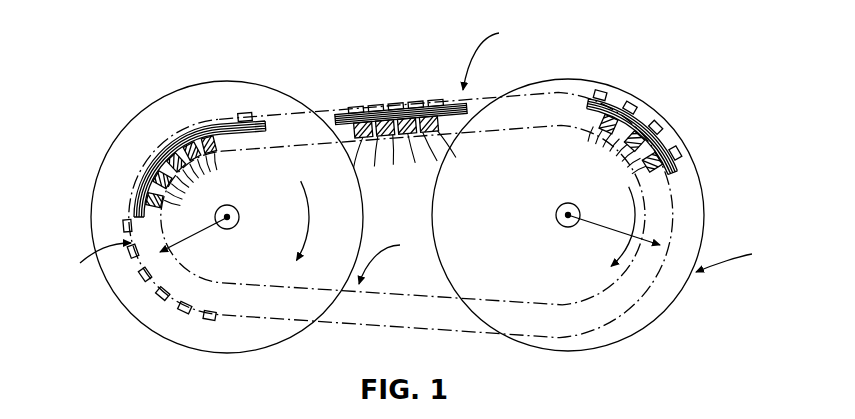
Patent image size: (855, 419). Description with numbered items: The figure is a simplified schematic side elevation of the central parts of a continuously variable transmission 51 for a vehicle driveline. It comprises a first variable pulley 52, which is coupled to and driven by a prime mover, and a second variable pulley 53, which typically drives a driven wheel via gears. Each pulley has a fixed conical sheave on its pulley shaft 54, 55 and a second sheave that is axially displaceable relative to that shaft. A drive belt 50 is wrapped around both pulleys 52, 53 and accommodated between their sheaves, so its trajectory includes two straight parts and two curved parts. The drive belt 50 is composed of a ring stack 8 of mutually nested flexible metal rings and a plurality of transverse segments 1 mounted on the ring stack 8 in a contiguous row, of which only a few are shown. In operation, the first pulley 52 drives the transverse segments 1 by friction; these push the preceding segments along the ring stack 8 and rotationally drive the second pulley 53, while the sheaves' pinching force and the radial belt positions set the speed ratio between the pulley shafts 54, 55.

The transverse segment 1 is at (643, 162).
The ring stack 8 is at (675, 159).
The drive belt 50 is at (392, 95).
The continuously variable transmission 51 is at (694, 46).
The first variable pulley 52 is at (161, 112).
The second variable pulley 53 is at (562, 84).
The pulley shaft 54 is at (240, 216).
The pulley shaft 55 is at (562, 204).